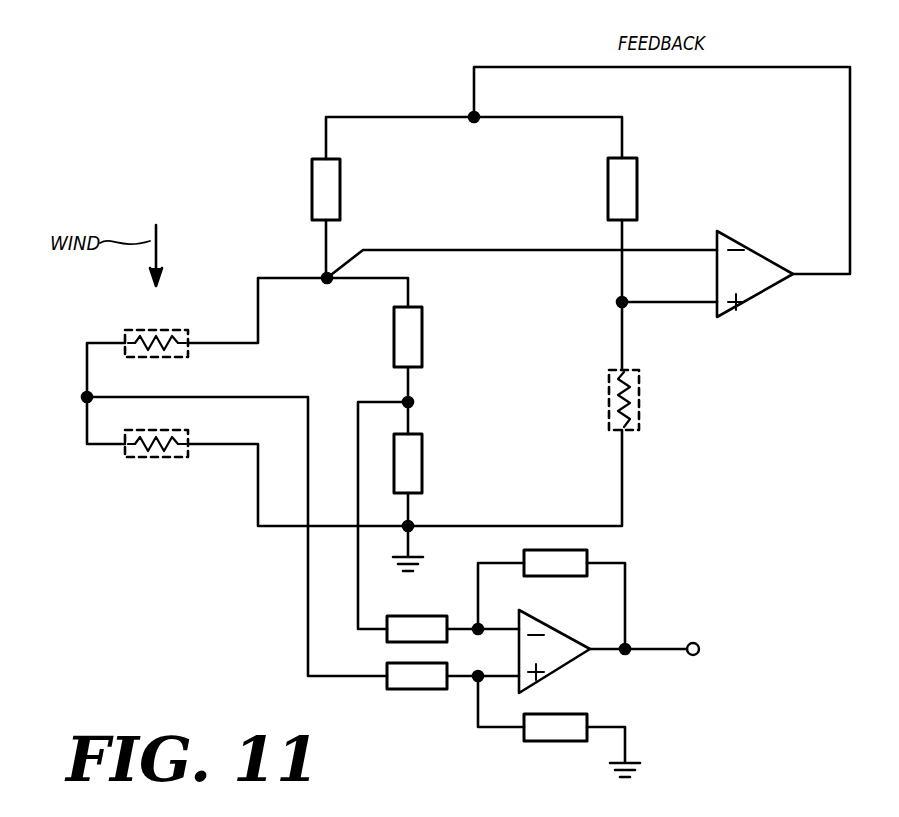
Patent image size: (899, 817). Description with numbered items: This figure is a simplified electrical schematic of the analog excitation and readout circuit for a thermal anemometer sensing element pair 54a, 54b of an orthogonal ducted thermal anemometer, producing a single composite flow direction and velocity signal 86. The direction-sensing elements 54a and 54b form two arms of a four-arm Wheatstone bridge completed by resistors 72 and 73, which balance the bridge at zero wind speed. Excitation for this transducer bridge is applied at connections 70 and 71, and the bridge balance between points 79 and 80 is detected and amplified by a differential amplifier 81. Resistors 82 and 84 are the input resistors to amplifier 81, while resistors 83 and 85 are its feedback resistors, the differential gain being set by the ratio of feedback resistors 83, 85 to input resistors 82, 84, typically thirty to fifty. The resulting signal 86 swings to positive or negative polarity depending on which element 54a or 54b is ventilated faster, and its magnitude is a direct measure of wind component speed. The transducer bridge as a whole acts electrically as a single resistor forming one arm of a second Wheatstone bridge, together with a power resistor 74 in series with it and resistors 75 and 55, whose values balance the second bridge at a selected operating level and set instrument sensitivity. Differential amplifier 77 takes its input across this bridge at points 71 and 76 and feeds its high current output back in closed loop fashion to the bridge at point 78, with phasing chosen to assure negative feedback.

The thermal anemometer sensing element 54a is at (152, 338).
The thermal anemometer sensing element 54b is at (154, 455).
The resistor 55 is at (636, 402).
The connection 70 is at (408, 526).
The connection 71 is at (327, 278).
The resistor 72 is at (412, 334).
The resistor 73 is at (412, 470).
The power resistor 74 is at (326, 186).
The resistor 75 is at (622, 183).
The point 76 is at (622, 302).
The differential amplifier 77 is at (755, 252).
The point 78 is at (474, 117).
The point 79 is at (408, 402).
The point 80 is at (86, 397).
The differential amplifier 81 is at (560, 633).
The input resistor 82 is at (412, 617).
The feedback resistor 83 is at (553, 568).
The input resistor 84 is at (424, 681).
The feedback resistor 85 is at (548, 722).
The composite flow direction and velocity signal 86 is at (699, 647).